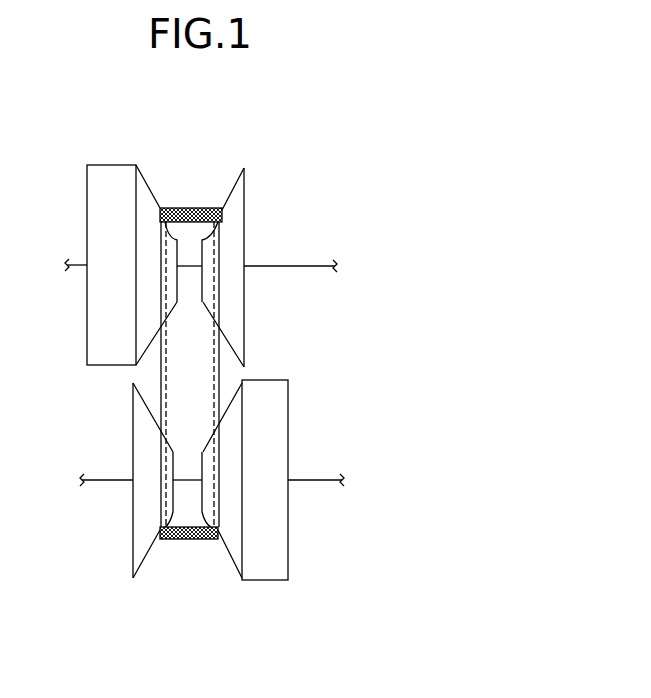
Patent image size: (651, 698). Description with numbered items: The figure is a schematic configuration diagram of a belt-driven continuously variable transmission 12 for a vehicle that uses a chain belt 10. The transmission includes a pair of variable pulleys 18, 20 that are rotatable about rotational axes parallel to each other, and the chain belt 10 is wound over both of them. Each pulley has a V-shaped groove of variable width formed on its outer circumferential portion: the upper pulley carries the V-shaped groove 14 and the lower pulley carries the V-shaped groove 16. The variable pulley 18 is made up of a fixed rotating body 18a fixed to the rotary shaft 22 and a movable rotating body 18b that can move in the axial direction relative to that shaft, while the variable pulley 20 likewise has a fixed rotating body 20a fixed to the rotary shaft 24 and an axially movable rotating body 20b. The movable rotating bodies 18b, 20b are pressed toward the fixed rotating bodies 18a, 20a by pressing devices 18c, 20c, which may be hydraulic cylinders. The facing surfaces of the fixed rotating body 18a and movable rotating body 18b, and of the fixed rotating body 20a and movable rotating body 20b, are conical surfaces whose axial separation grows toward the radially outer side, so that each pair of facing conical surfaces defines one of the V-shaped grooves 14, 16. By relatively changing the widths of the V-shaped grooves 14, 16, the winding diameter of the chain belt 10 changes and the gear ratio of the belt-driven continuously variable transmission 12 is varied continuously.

The chain belt 10 is at (192, 198).
The belt-driven continuously variable transmission 12 is at (304, 151).
The V-shaped groove 14 is at (219, 168).
The V-shaped groove 16 is at (168, 574).
The variable pulley 18 is at (78, 182).
The fixed rotating body 18a is at (233, 213).
The movable rotating body 18b is at (158, 206).
The pressing device 18c is at (90, 302).
The variable pulley 20 is at (299, 566).
The fixed rotating body 20a is at (140, 523).
The movable rotating body 20b is at (228, 537).
The pressing device 20c is at (285, 440).
The rotary shaft 22 is at (280, 263).
The rotary shaft 24 is at (305, 485).